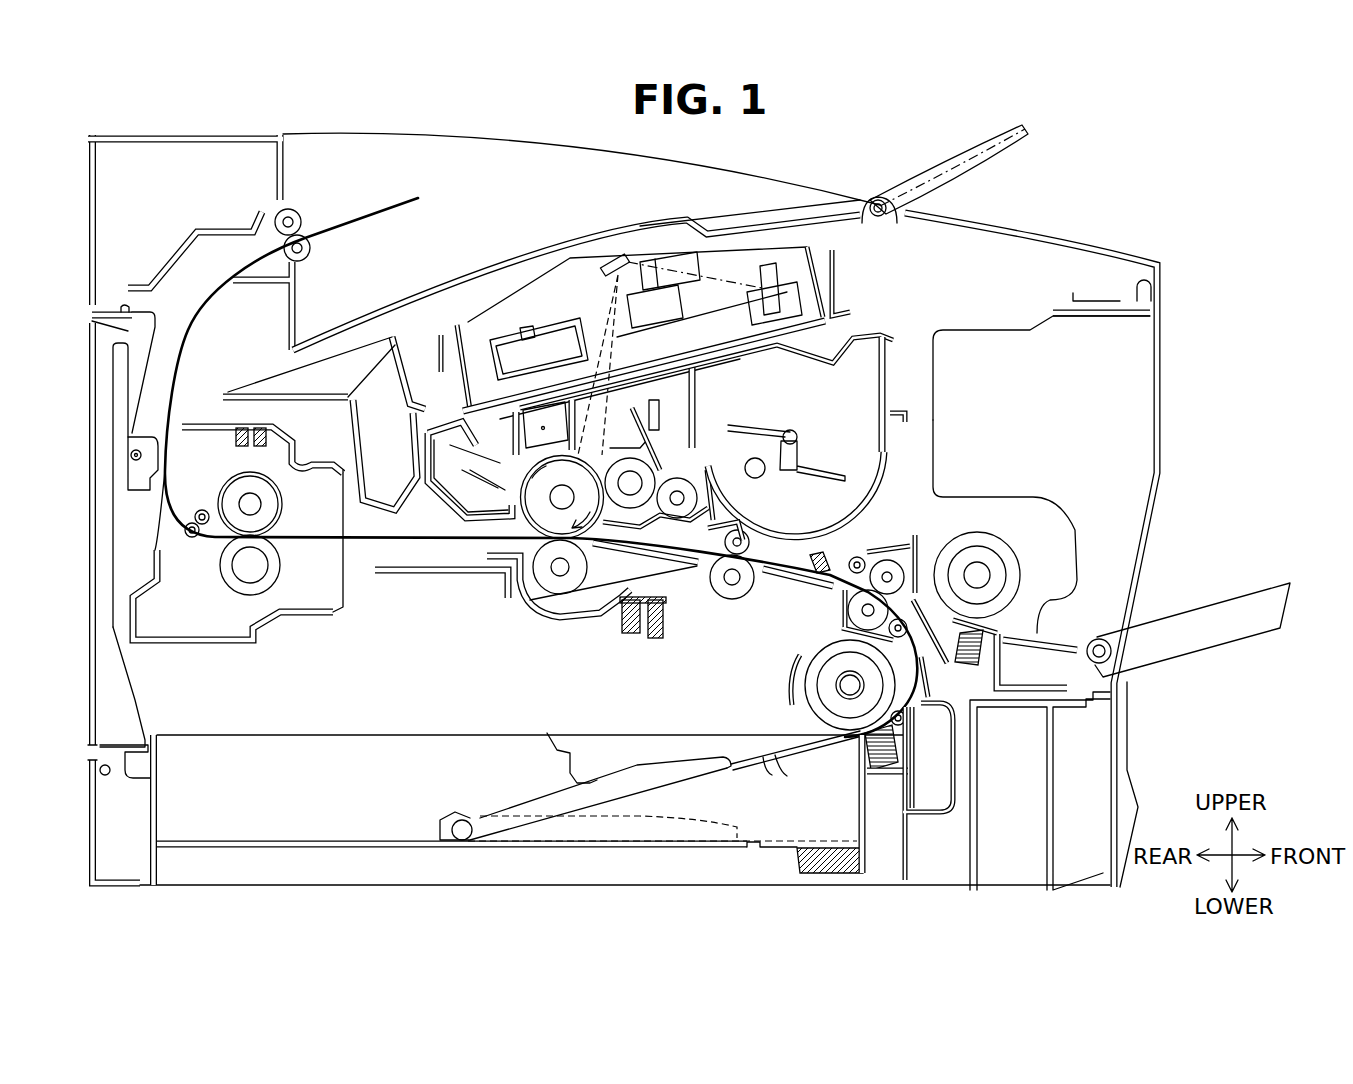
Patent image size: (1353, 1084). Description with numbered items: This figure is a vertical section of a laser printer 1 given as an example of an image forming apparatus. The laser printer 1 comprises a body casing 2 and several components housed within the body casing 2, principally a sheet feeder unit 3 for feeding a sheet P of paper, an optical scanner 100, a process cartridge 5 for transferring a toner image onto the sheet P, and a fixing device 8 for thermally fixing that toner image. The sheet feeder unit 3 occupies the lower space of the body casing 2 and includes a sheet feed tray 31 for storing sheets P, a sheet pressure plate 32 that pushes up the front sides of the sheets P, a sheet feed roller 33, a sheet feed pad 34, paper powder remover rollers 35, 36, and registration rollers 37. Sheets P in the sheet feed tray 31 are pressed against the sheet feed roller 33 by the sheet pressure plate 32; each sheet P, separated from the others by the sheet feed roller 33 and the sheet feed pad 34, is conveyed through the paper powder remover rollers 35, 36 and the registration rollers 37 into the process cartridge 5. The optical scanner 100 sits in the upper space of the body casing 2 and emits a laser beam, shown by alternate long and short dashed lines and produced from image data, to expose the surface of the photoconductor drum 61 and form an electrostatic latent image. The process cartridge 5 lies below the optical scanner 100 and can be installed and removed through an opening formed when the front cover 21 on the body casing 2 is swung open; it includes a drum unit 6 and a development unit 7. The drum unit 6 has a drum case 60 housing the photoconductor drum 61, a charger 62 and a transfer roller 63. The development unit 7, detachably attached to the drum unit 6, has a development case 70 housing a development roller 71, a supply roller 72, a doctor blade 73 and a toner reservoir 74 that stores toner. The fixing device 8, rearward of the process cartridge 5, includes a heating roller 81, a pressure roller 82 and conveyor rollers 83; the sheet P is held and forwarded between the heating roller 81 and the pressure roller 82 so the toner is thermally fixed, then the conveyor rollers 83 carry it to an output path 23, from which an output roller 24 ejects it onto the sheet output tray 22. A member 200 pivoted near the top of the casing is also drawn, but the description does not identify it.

The laser printer 1 is at (1122, 154).
The body casing 2 is at (1050, 232).
The sheet feeder unit 3 is at (222, 725).
The process cartridge 5 is at (880, 306).
The drum unit 6 is at (433, 498).
The development unit 7 is at (895, 333).
The fixing device 8 is at (348, 612).
The front cover 21 is at (1162, 382).
The sheet output tray 22 is at (452, 272).
The output path 23 is at (163, 345).
The output roller 24 is at (312, 225).
The sheet feed tray 31 is at (150, 805).
The sheet pressure plate 32 is at (520, 782).
The sheet feed roller 33 is at (812, 666).
The sheet feed pad 34 is at (866, 742).
The paper powder remover roller 35 is at (908, 725).
The paper powder remover roller 36 is at (927, 577).
The registration rollers 37 is at (720, 590).
The drum case 60 is at (889, 462).
The photoconductor drum 61 is at (520, 525).
The charger 62 is at (562, 497).
The transfer roller 63 is at (567, 590).
The development case 70 is at (862, 336).
The development roller 71 is at (620, 463).
The supply roller 72 is at (682, 482).
The doctor blade 73 is at (667, 465).
The toner reservoir 74 is at (842, 408).
The heating roller 81 is at (224, 484).
The pressure roller 82 is at (281, 572).
The conveyor rollers 83 is at (207, 535).
The optical scanner 100 is at (537, 270).
The lever 200 is at (847, 250).
The sheet P is at (393, 192).